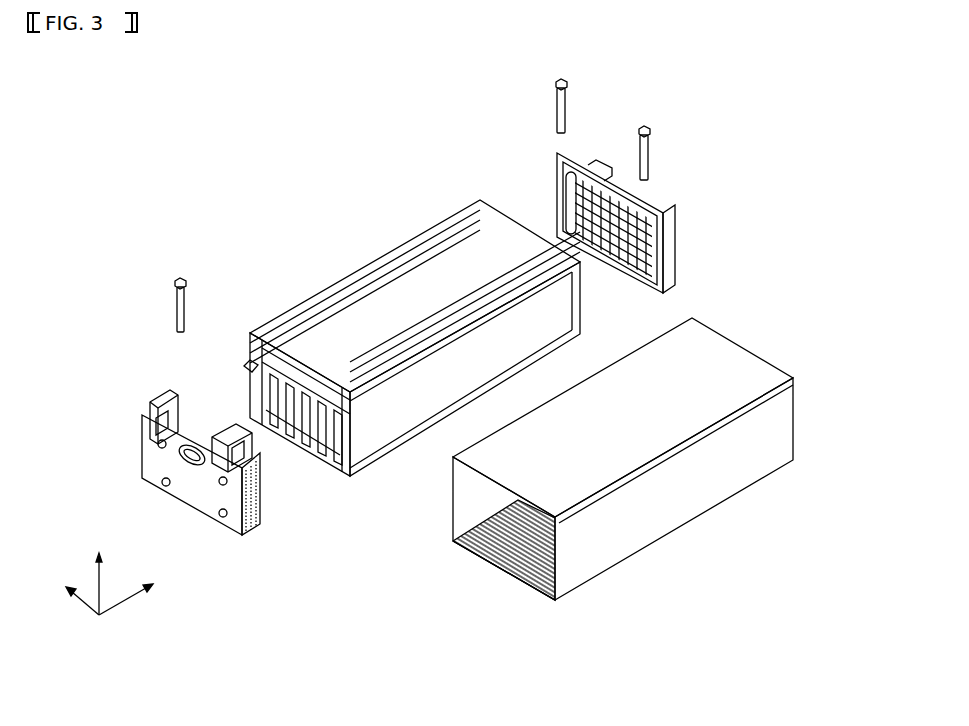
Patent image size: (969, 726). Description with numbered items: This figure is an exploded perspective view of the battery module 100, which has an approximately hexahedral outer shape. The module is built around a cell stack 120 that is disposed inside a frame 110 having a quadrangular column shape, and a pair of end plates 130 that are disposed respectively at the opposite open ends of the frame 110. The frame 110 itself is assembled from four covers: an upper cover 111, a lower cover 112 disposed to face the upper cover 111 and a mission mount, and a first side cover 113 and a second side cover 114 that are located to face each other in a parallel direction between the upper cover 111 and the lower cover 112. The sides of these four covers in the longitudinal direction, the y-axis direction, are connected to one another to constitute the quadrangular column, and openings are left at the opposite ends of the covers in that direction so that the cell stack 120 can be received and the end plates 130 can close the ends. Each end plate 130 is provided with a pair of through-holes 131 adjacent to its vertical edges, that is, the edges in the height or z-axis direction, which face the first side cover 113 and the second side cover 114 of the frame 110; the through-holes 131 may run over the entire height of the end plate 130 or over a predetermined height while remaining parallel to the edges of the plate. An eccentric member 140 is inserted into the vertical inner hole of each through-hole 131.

The battery module 100 is at (73, 96).
The frame 110 is at (730, 322).
The upper cover 111 is at (700, 398).
The lower cover 112 is at (497, 568).
The first side cover 113 is at (764, 432).
The second side cover 114 is at (473, 498).
The cell stack 120 is at (378, 254).
The end plate 130 is at (270, 472).
The through-hole 131 is at (150, 403).
The eccentric member 140 is at (172, 298).